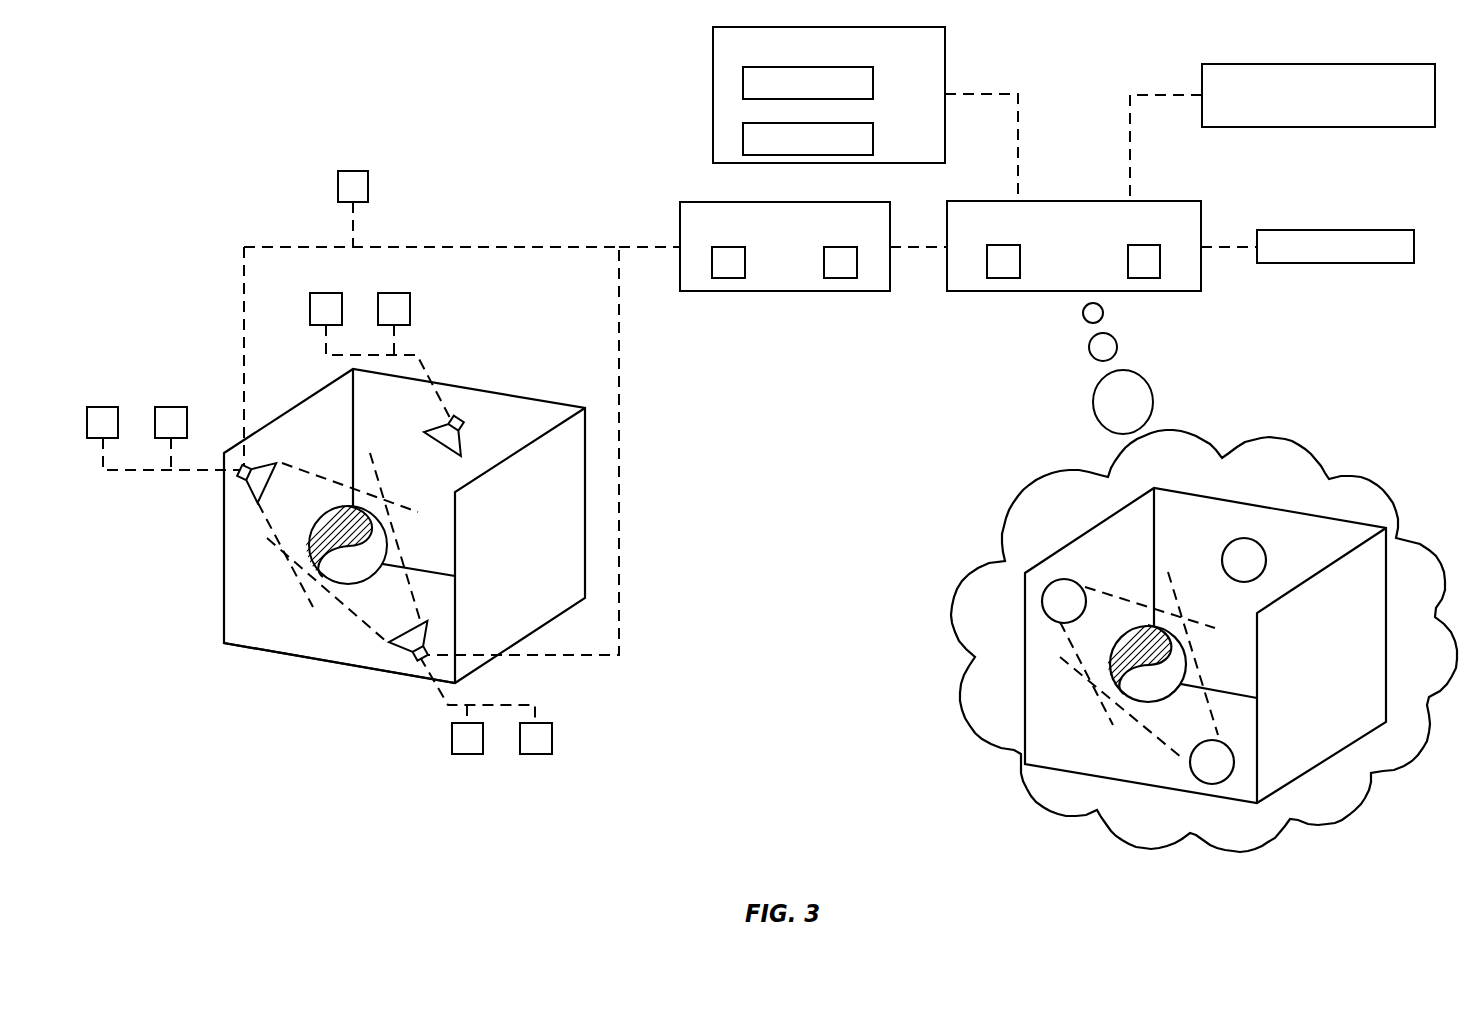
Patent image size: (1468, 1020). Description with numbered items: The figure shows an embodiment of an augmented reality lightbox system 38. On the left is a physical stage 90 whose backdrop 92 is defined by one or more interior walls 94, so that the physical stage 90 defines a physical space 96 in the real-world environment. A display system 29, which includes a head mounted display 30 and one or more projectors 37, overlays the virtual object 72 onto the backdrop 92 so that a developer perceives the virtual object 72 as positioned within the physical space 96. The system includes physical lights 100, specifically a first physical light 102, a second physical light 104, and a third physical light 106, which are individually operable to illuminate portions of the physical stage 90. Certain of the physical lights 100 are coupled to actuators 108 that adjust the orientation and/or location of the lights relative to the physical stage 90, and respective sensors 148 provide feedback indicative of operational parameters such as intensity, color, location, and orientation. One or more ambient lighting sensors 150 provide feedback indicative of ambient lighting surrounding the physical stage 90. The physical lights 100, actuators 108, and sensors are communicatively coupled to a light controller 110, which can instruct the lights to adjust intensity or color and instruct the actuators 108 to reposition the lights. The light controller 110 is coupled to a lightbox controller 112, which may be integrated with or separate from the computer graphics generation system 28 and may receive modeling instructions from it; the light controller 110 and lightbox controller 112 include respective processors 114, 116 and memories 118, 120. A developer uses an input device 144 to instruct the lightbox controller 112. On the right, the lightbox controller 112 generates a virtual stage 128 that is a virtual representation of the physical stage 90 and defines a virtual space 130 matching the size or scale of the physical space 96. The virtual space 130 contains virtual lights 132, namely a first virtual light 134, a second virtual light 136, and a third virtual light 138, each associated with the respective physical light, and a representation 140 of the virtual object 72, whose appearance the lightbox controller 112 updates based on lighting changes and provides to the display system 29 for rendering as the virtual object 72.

The computer graphics generation system 28 is at (1318, 64).
The display system 29 is at (831, 27).
The head mounted display 30 is at (873, 78).
The projectors 37 is at (873, 135).
The AR lightbox system 38 is at (517, 54).
The virtual object 72 is at (313, 535).
The physical stage 90 is at (362, 533).
The backdrop 92 is at (389, 412).
The interior walls 94 is at (288, 427).
The physical space 96 is at (279, 635).
The physical lights 100 is at (362, 523).
The first physical light 102 is at (243, 490).
The second physical light 104 is at (470, 440).
The third physical light 106 is at (428, 632).
The actuators 108 is at (325, 293).
The light controller 110 is at (785, 202).
The lightbox controller 112 is at (1047, 201).
The processor of light controller 114 is at (728, 278).
The processor of lightbox controller 116 is at (1003, 278).
The memory of light controller 118 is at (840, 278).
The memory of lightbox controller 120 is at (1144, 278).
The virtual stage 128 is at (1115, 784).
The virtual space 130 is at (1104, 761).
The virtual lights 132 is at (1203, 645).
The first virtual light 134 is at (1053, 586).
The second virtual light 136 is at (1262, 543).
The third virtual light 138 is at (1234, 768).
The representation of virtual object 140 is at (1123, 696).
The input device 144 is at (1335, 230).
The sensors 148 is at (393, 293).
The ambient lighting sensors 150 is at (346, 171).